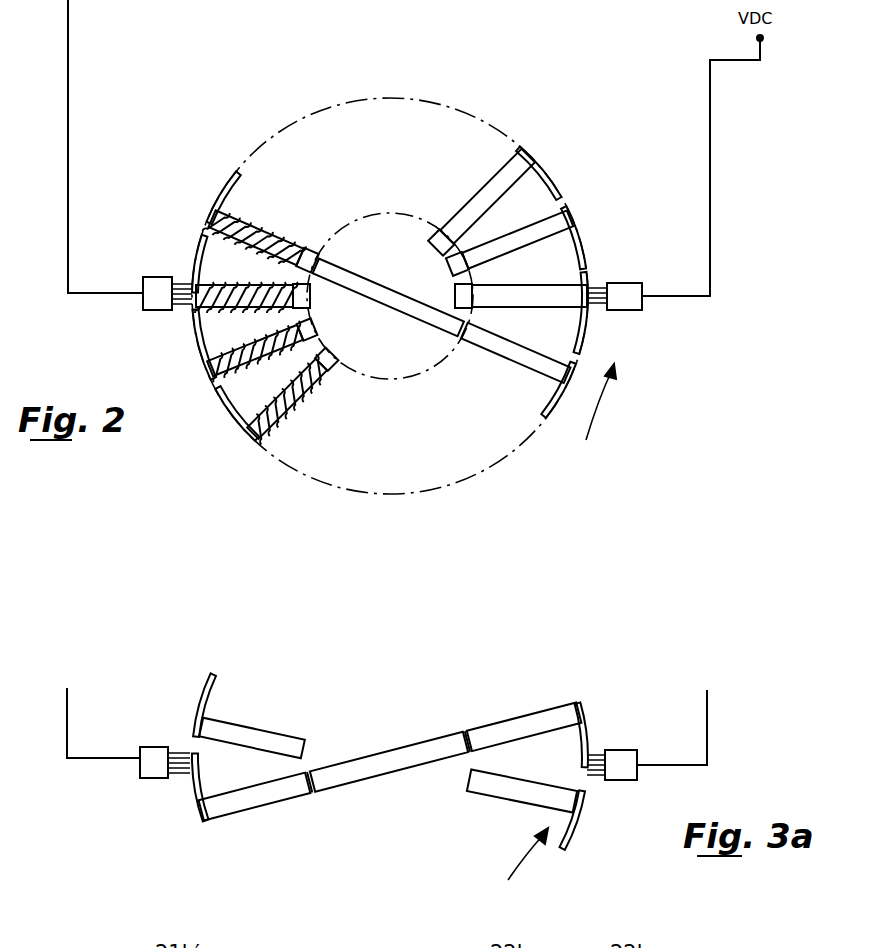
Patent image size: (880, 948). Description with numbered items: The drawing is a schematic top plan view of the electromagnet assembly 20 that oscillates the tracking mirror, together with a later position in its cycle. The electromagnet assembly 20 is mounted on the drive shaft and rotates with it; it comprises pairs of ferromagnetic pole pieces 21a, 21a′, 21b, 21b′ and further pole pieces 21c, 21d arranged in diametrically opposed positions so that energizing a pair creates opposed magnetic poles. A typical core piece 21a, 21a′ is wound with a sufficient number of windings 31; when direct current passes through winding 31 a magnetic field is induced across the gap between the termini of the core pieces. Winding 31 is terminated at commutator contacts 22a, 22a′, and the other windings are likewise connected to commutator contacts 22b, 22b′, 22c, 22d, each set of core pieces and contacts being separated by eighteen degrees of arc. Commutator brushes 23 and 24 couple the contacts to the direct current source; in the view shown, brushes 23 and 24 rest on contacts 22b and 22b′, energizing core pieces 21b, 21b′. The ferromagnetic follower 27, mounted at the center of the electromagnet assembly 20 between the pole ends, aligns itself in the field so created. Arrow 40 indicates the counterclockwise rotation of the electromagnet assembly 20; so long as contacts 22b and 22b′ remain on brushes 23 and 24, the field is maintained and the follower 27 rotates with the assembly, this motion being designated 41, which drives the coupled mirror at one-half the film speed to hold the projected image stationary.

In FIG. 2, the electromagnet assembly 20 is at (524, 98).
In FIG. 2, the pole piece 21a is at (553, 340).
In FIG. 3A, the pole piece 21a is at (518, 797).
In FIG. 2, the pole piece 21a′ is at (218, 224).
In FIG. 3A, the pole piece 21a′ is at (258, 728).
In FIG. 2, the pole piece 21b is at (262, 285).
In FIG. 3A, the pole piece 21b is at (530, 720).
In FIG. 2, the pole piece 21b′ is at (196, 268).
In FIG. 3A, the pole piece 21b′ is at (246, 805).
In FIG. 2, the armature core segment 21c is at (533, 228).
In FIG. 2, the armature core segment 21d is at (499, 171).
In FIG. 2, the commutator contact 22a is at (556, 413).
In FIG. 3A, the commutator contact 22a is at (568, 840).
In FIG. 2, the commutator contact 22a′ is at (233, 170).
In FIG. 3A, the commutator contact 22a′ is at (205, 690).
In FIG. 2, the commutator contact 22b is at (580, 350).
In FIG. 3A, the commutator contact 22b is at (580, 722).
In FIG. 3A, the commutator contact 22b′ is at (197, 815).
In FIG. 2, the commutator contact 22c is at (588, 254).
In FIG. 2, the commutator segment 22d is at (560, 180).
In FIG. 2, the commutator brush 23 is at (606, 284).
In FIG. 3A, the commutator brush 23 is at (594, 750).
In FIG. 2, the commutator brush 24 is at (180, 278).
In FIG. 3A, the commutator brush 24 is at (178, 750).
In FIG. 2, the ferromagnetic follower 27 is at (403, 311).
In FIG. 3A, the ferromagnetic follower 27 is at (407, 756).
In FIG. 2, the winding 31 is at (298, 240).
In FIG. 3A, the arrow 40 is at (511, 863).
In FIG. 3A, the motion 41 is at (432, 714).